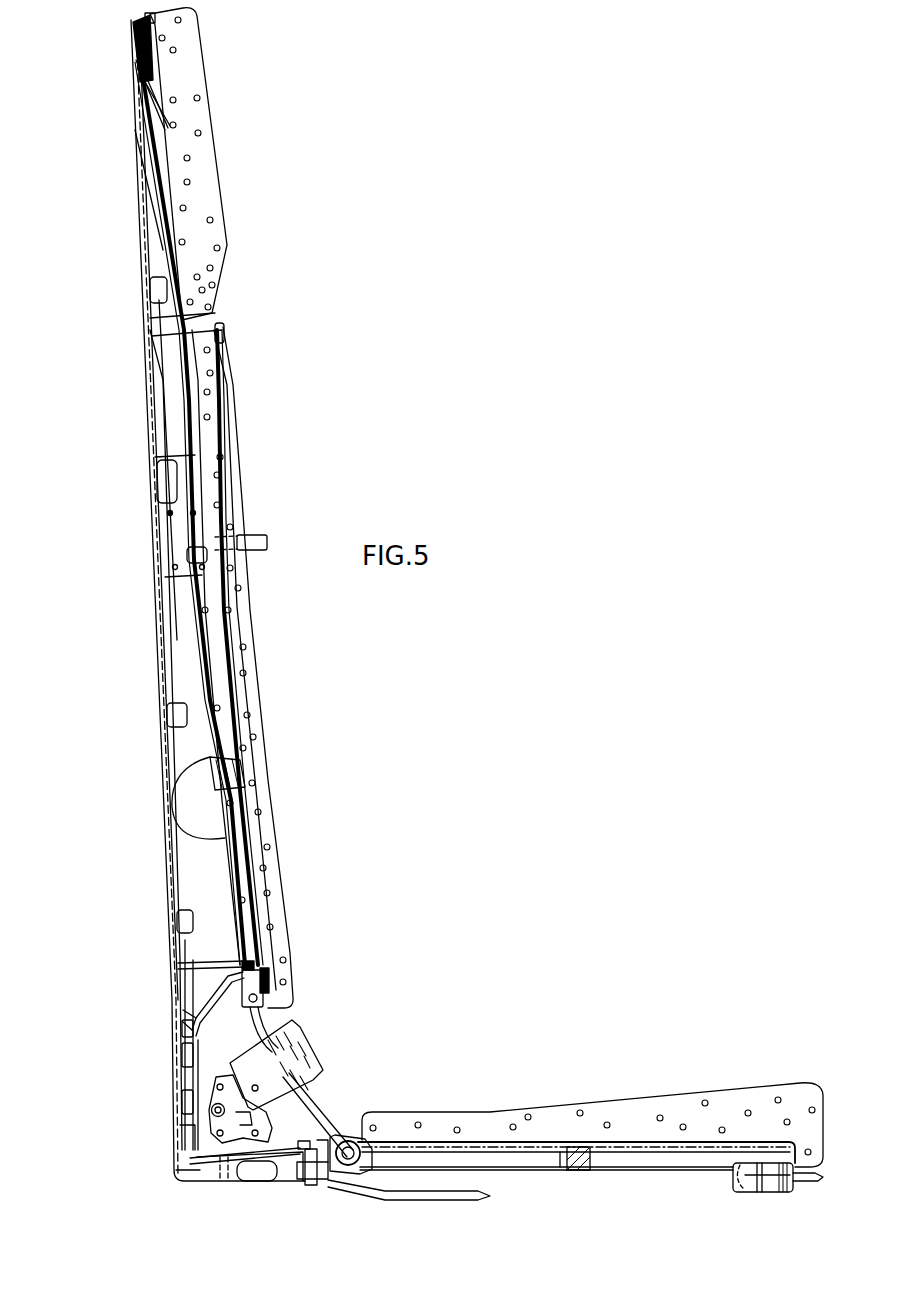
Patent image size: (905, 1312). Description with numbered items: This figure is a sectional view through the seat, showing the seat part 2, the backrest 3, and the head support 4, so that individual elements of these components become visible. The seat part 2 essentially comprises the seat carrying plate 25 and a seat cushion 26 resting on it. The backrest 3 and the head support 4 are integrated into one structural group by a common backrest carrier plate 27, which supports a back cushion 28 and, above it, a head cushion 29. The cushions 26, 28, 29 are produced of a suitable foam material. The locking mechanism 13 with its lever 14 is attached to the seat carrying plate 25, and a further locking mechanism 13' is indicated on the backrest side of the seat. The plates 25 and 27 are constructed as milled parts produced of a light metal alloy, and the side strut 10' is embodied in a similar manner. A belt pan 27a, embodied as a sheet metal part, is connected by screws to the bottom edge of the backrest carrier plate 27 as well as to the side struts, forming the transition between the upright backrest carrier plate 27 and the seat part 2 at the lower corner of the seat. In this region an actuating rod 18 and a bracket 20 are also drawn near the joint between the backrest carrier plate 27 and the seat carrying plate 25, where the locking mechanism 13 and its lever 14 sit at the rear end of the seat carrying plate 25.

The seat part 2 is at (583, 937).
The backrest 3 is at (322, 657).
The head support 4 is at (250, 153).
The side strut 10' is at (239, 1191).
The locking mechanism 13 is at (746, 1186).
The locking device 13' is at (73, 487).
The lever 14 is at (813, 1181).
The actuating rod 18 is at (483, 1195).
The bracket 20 is at (310, 1193).
The seat carrying plate 25 is at (585, 1172).
The seat cushion 26 is at (675, 1108).
The backrest carrier plate 27 is at (210, 657).
The belt pan 27a is at (193, 1007).
The back cushion 28 is at (273, 908).
The head cushion 29 is at (190, 82).